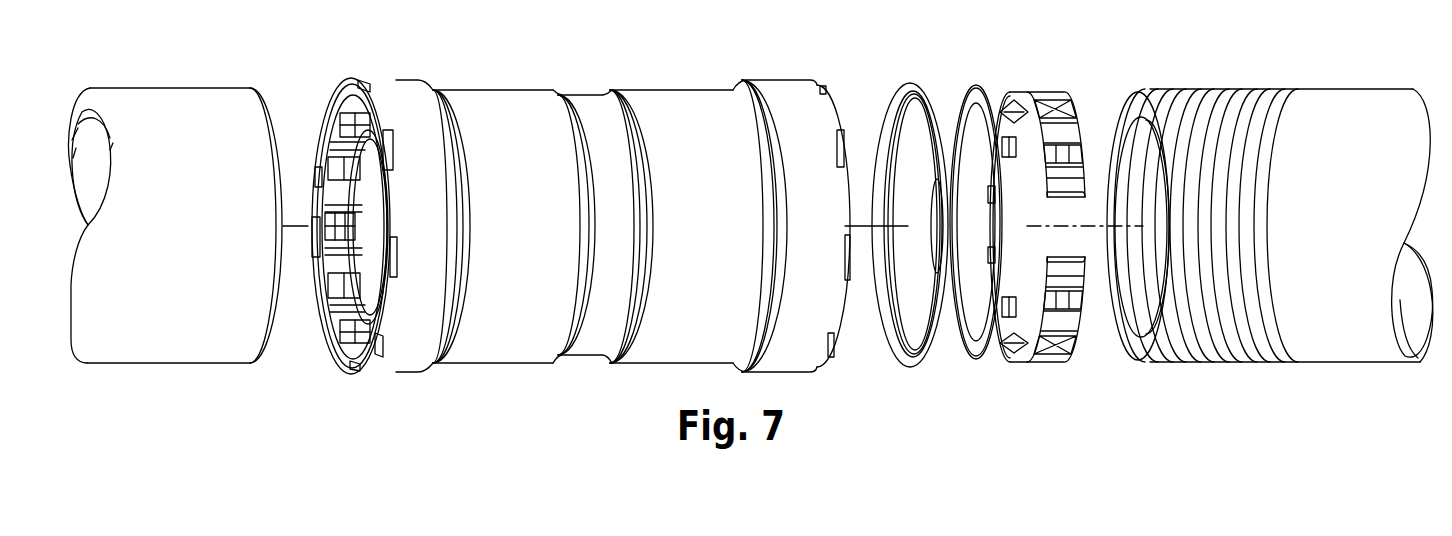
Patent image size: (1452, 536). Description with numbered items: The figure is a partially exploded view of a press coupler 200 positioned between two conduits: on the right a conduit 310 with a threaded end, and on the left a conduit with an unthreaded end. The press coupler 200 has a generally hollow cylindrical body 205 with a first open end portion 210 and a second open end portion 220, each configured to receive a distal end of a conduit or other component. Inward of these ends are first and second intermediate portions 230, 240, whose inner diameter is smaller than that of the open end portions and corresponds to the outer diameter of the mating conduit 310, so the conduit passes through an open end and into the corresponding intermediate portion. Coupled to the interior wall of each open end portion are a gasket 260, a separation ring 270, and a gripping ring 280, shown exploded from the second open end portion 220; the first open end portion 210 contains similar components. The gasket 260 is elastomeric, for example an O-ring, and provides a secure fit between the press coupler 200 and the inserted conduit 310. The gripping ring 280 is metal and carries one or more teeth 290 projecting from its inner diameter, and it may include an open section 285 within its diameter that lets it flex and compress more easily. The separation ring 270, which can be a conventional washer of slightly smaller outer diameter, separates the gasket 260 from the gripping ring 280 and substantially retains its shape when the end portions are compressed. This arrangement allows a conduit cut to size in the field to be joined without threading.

The press coupler 200 is at (655, 212).
The body 205 is at (525, 353).
The first open end portion 210 is at (310, 117).
The second open end portion 220 is at (838, 68).
The first intermediate portion 230 is at (480, 353).
The second intermediate portion 240 is at (665, 352).
The gasket 260 is at (927, 350).
The separation ring 270 is at (977, 348).
The gripping ring 280 is at (1075, 208).
The open section 285 is at (1073, 214).
The teeth 290 is at (1024, 142).
The conduit 310 is at (1352, 105).